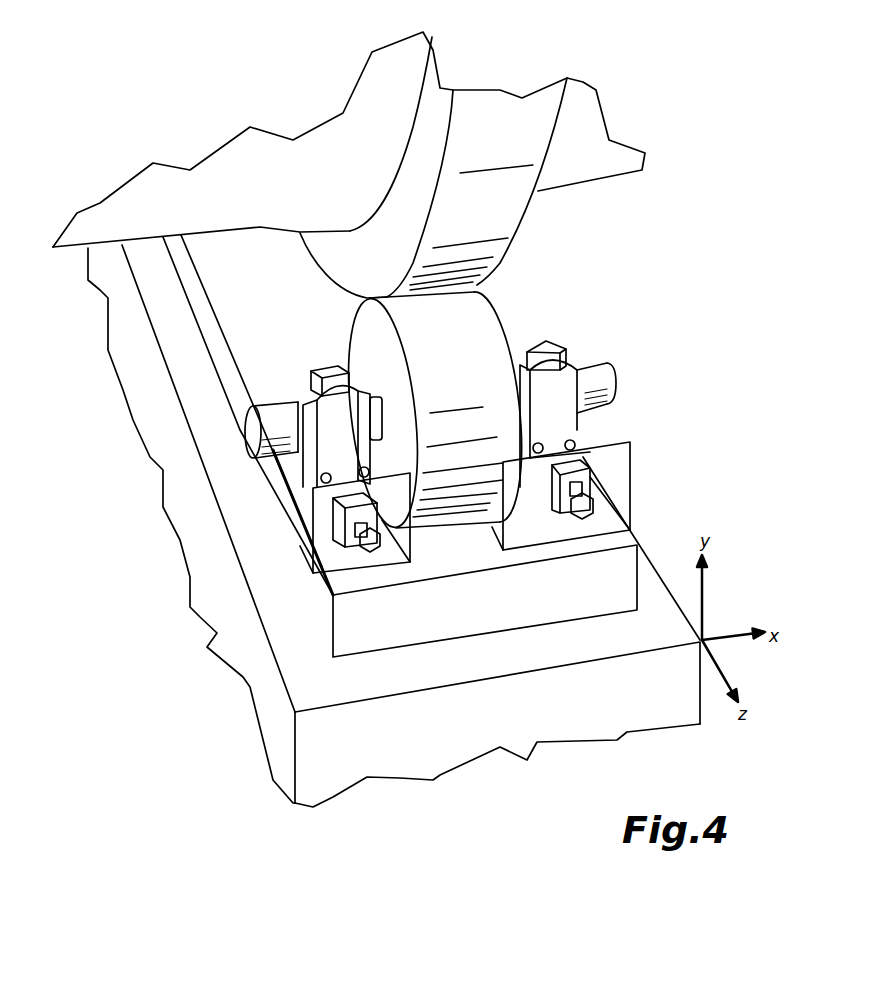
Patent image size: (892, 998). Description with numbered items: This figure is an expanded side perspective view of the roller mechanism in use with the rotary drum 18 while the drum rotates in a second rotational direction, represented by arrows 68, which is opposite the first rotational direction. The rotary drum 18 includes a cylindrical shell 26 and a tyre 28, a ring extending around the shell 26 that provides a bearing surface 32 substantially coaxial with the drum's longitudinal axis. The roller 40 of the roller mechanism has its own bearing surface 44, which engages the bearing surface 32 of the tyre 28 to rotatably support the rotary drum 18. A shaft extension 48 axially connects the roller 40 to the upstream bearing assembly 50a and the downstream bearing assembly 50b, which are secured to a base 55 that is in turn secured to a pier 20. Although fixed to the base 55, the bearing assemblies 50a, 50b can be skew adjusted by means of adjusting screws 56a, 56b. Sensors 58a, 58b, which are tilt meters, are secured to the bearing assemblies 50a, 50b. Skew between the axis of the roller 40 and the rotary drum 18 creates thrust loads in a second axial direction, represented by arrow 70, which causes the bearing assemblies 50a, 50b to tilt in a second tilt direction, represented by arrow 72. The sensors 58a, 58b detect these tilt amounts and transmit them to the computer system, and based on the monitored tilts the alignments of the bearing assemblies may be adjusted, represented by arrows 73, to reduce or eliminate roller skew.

The rotary drum 18 is at (699, 43).
The pier 20 is at (331, 767).
The shell 26 is at (103, 215).
The tyre 28 is at (417, 113).
The bearing surface 32 is at (477, 128).
The roller 40 is at (525, 329).
The bearing surface 44 is at (345, 302).
The shaft extension 48 is at (253, 433).
The bearing assembly 50a is at (553, 412).
The bearing assembly 50b is at (310, 447).
The base 55 is at (197, 297).
The adjusting screw 56a is at (587, 483).
The adjusting screw 56b is at (337, 527).
The sensor 58a is at (545, 352).
The sensor 58b is at (312, 368).
The arrows 68 is at (263, 121).
The arrow 70 is at (400, 227).
The arrow 72 is at (505, 300).
The arrows 73 is at (349, 622).